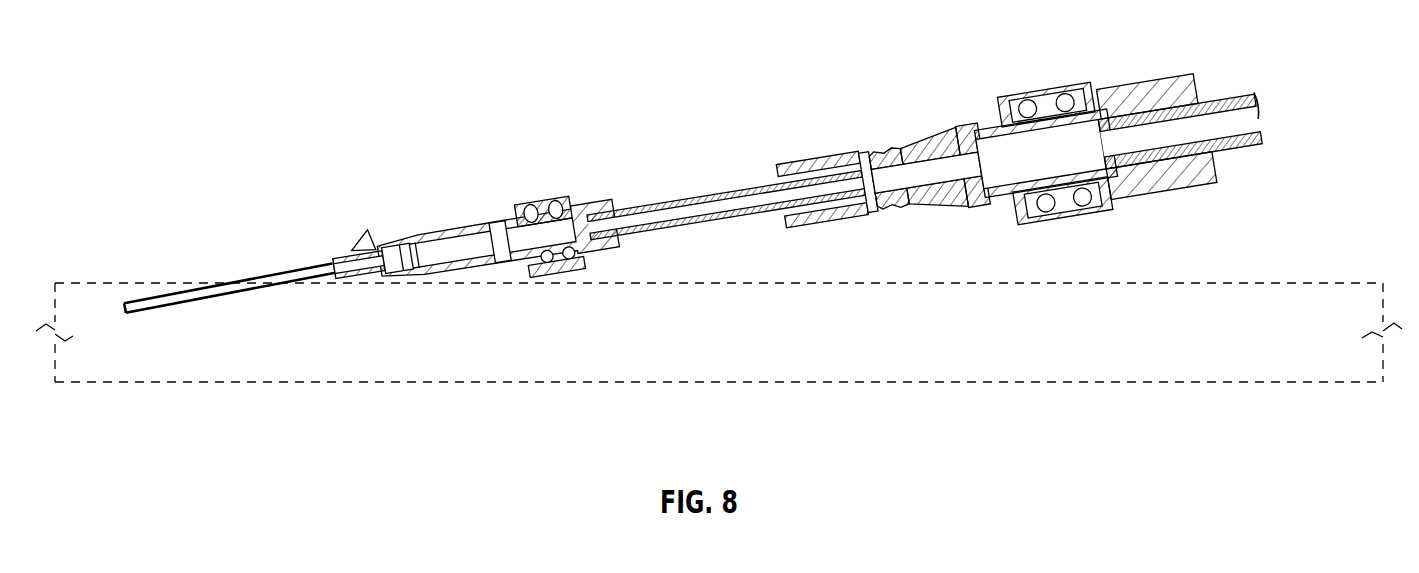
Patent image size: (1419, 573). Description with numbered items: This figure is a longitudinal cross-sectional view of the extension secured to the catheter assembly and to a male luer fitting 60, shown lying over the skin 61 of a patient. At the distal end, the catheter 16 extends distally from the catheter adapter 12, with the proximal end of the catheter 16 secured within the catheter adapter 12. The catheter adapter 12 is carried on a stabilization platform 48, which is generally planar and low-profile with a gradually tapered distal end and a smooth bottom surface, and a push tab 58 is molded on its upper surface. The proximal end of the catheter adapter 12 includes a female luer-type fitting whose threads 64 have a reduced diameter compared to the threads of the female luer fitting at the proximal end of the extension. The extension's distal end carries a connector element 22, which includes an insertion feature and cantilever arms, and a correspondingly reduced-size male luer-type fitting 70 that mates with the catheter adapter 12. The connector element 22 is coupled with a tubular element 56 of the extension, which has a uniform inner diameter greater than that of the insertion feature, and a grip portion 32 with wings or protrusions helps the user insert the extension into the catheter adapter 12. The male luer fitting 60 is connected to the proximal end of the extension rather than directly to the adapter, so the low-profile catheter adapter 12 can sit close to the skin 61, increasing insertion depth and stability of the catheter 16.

The catheter adapter 12 is at (437, 220).
The catheter 16 is at (253, 279).
The connector element 22 is at (543, 191).
The grip portion 32 is at (888, 135).
The stabilization platform 48 is at (419, 284).
The tubular element 56 is at (712, 240).
The push tab 58 is at (367, 231).
The male luer fitting 60 is at (1152, 83).
The skin 61 is at (811, 348).
The threads 64 is at (528, 272).
The male luer-type fitting 70 is at (572, 280).